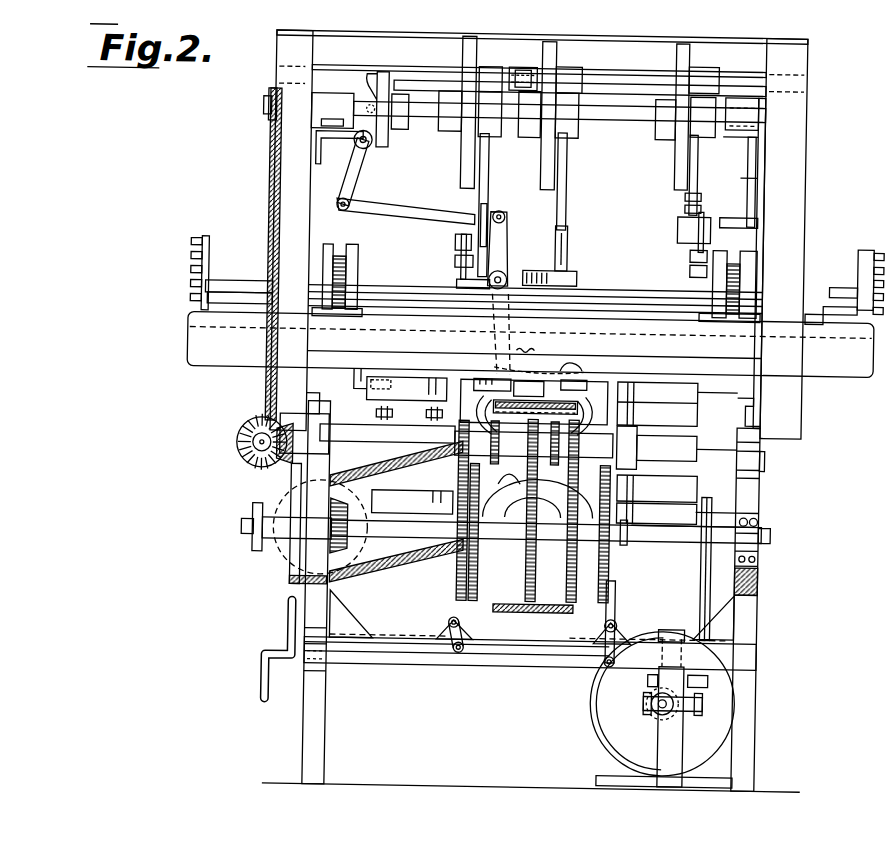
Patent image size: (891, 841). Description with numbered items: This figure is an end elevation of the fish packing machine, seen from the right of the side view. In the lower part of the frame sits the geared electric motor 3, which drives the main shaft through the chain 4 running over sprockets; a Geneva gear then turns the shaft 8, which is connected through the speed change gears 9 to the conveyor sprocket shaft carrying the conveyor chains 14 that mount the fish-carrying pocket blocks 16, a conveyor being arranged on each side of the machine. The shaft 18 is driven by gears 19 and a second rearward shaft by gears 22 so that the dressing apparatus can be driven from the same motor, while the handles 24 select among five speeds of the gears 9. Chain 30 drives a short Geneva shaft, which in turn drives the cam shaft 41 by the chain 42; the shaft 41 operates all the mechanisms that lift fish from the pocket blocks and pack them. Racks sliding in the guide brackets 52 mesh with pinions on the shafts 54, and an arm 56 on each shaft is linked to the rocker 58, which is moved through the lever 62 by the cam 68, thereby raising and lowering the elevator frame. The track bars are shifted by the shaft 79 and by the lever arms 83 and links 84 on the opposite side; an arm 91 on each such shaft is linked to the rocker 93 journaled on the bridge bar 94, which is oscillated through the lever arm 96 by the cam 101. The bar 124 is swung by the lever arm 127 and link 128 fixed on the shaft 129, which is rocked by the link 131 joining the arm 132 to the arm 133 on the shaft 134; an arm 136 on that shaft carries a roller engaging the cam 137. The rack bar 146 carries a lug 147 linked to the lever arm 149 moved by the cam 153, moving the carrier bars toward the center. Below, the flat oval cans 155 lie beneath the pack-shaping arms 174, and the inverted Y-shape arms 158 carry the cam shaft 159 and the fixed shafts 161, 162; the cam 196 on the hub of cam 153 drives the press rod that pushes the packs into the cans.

The electric motor 3 is at (633, 703).
The chain 4 is at (708, 596).
The shaft 8 is at (665, 536).
The speed change gears 9 is at (528, 547).
The conveyor chains 14 is at (383, 411).
The pocket blocks 16 is at (376, 395).
The shaft 18 is at (527, 451).
The gears 19 is at (283, 462).
The gears 22 is at (368, 511).
The handles 24 is at (298, 644).
The chain 30 is at (258, 507).
The shaft 41 is at (624, 114).
The chain 42 is at (275, 166).
The guide bracket 52 is at (353, 244).
The shaft 54 is at (384, 292).
The arm 56 is at (694, 276).
The rocker 58 is at (686, 232).
The lever 62 is at (702, 166).
The cam 68 is at (690, 46).
The shaft 79 is at (252, 284).
The lever arms 83 is at (213, 258).
The links 84 is at (205, 240).
The arm 91 is at (459, 257).
The rocker 93 is at (459, 238).
The bridge bar 94 is at (505, 244).
The lever arm 96 is at (490, 172).
The cam 101 is at (466, 50).
The bar 124 is at (231, 357).
The lever arm 127 is at (542, 342).
The link 128 is at (586, 355).
The shaft 129 is at (461, 278).
The link 131 is at (407, 206).
The arm 132 is at (509, 206).
The arm 133 is at (364, 168).
The shaft 134 is at (358, 143).
The arm 136 is at (364, 128).
The cam 137 is at (384, 72).
The rack bar 146 is at (572, 274).
The lug 147 is at (571, 256).
The lever arm 149 is at (570, 178).
The cam 153 is at (558, 48).
The flat oval cans 155 is at (539, 383).
The inverted Y-shape arms 158 is at (510, 480).
The cam shaft 159 is at (529, 486).
The fixed shaft 161 is at (484, 510).
The fixed shaft 162 is at (588, 511).
The pack-shaping arms 174 is at (506, 378).
The cam 196 is at (540, 66).